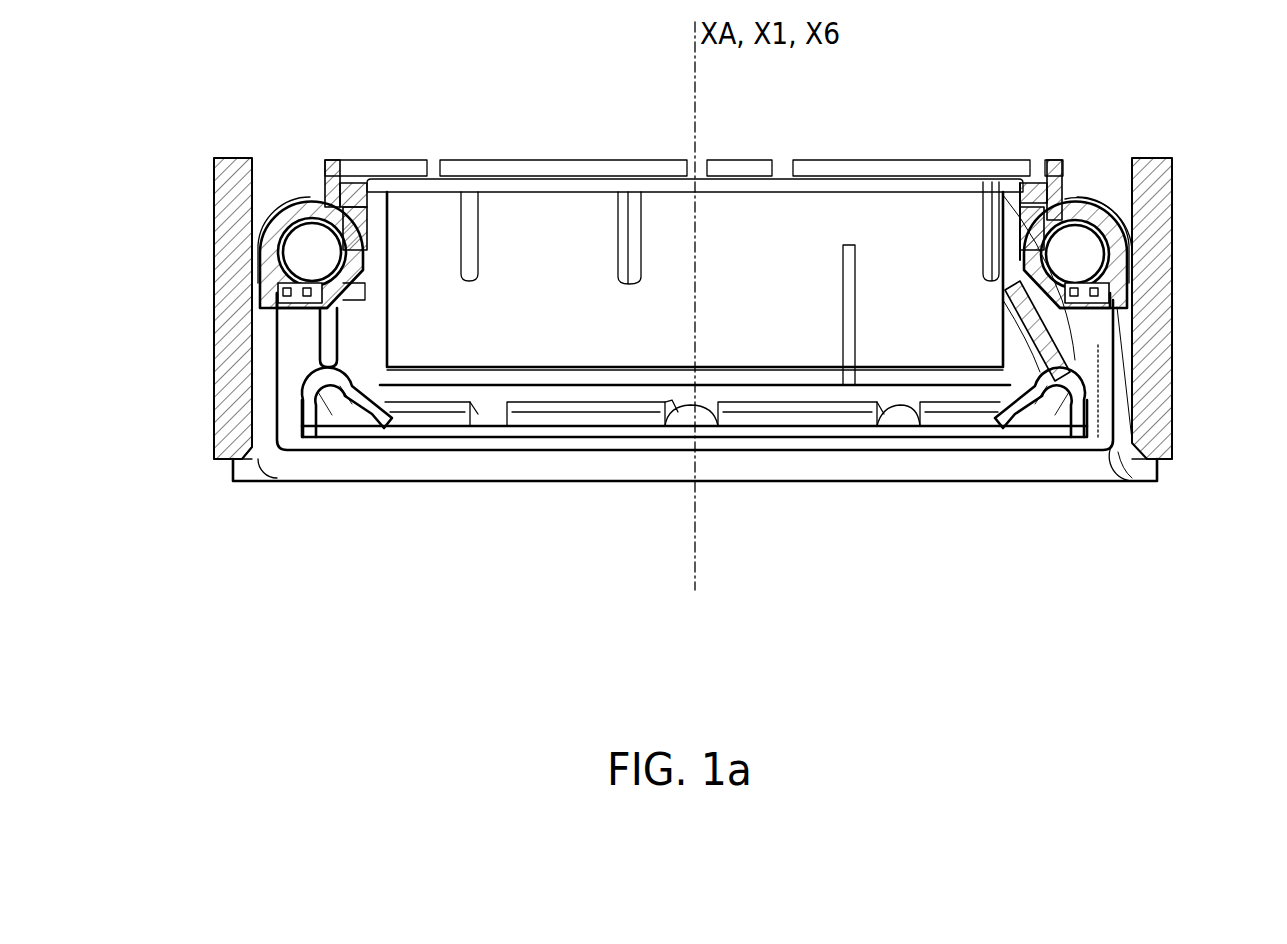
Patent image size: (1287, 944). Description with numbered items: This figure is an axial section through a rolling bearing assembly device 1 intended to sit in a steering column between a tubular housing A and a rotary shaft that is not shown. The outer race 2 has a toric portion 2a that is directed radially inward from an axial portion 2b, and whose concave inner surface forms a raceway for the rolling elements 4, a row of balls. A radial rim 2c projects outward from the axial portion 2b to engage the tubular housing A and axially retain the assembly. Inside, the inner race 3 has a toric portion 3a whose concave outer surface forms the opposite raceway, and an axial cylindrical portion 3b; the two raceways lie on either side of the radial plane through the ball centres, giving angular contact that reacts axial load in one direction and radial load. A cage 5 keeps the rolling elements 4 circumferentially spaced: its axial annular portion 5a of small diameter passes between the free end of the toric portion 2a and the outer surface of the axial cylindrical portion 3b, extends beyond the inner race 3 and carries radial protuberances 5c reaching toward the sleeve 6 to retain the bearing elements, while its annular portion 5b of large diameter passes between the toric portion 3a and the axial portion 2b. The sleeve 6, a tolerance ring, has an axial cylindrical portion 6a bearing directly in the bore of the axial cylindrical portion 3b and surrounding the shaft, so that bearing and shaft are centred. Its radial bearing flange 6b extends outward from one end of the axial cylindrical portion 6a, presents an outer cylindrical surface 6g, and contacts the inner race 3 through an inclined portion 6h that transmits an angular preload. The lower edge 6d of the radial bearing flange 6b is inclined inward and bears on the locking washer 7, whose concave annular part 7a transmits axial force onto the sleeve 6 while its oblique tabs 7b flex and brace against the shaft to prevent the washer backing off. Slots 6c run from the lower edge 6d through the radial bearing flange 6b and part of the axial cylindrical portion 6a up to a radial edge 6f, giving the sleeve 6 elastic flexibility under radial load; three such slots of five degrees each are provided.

The rolling bearing assembly device 1 is at (322, 112).
The outer race 2 is at (1140, 378).
The toric portion 2a is at (250, 214).
The axial portion 2b is at (250, 380).
The radial rim 2c is at (268, 470).
The inner race 3 is at (355, 228).
The toric portion 3a is at (1018, 264).
The axial cylindrical portion 3b is at (1010, 207).
The rolling elements 4 is at (320, 266).
The cage 5 is at (1072, 168).
The axial annular portion of small diameter 5a is at (325, 160).
The annular portion of large diameter 5b is at (262, 292).
The radial protuberances 5c is at (352, 205).
The sleeve 6 is at (545, 235).
The axial cylindrical portion 6a is at (985, 257).
The radial bearing flange 6b is at (1018, 370).
The slots 6c is at (378, 356).
The lower edge 6d is at (1035, 400).
The radial edge 6f is at (372, 260).
The outer cylindrical surface 6g is at (1098, 345).
The inclined portion 6h is at (1118, 303).
The locking washer 7 is at (568, 440).
The annular part 7a is at (348, 405).
The tabs 7b is at (420, 420).
The tubular housing A is at (213, 444).